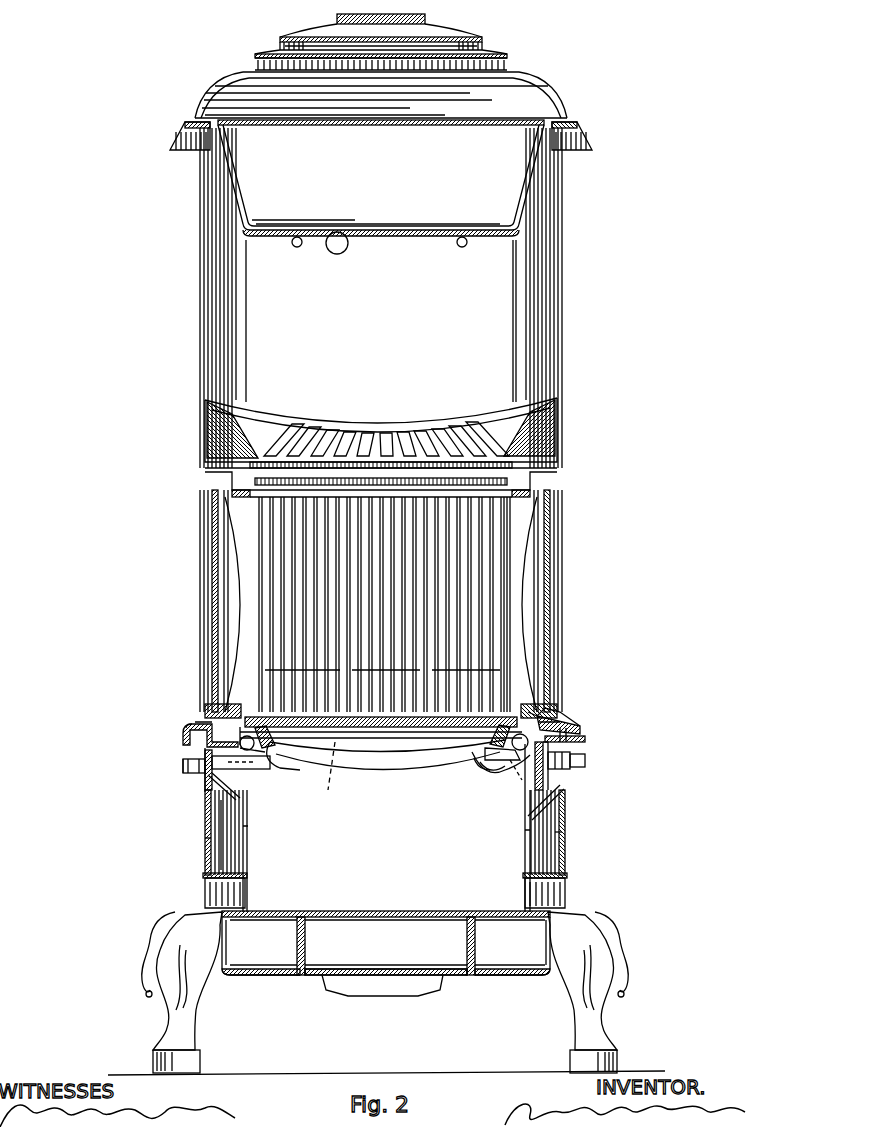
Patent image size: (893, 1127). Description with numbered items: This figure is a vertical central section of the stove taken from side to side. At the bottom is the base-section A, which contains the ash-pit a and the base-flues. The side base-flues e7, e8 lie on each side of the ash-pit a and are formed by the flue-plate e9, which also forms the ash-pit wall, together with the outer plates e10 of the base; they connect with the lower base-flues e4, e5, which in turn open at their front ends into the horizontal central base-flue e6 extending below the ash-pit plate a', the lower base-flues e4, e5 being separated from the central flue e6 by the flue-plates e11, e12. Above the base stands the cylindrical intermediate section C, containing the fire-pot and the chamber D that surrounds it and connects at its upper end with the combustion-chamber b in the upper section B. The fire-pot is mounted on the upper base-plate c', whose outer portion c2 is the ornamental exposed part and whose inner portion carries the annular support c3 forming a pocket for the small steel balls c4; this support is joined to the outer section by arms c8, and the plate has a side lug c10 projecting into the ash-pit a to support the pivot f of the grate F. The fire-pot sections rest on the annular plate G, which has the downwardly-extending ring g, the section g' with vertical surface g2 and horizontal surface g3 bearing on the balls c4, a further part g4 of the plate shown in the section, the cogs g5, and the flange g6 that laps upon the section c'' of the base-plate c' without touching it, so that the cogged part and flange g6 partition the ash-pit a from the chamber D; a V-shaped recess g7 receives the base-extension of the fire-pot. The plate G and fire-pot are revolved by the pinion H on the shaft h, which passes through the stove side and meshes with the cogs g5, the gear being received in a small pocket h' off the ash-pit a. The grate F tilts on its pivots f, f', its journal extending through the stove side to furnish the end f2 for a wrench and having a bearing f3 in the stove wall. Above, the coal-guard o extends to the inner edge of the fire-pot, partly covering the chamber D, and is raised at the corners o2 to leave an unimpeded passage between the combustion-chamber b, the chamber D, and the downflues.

The upper section B is at (560, 320).
The combustion-chamber b is at (381, 261).
The coal-guard o is at (290, 426).
The raised corners o2 is at (226, 412).
The intermediate section C is at (546, 553).
The chamber surrounding the fire-pot D is at (536, 598).
The annular fire-pot-supporting plate G is at (381, 734).
The downwardly-extending ring g is at (330, 771).
The section of plate G g' is at (577, 699).
The vertical surface g2 is at (498, 712).
The horizontal surface g3 is at (252, 724).
The grate pivot g4 is at (258, 746).
The cogs g5 is at (614, 727).
The horizontal extension or flange g6 is at (186, 725).
The recess g7 is at (540, 716).
The grate F is at (386, 755).
The pivot of the grate f is at (332, 752).
The pivot of the grate f' is at (207, 789).
The end of the grate pivot f2 is at (183, 766).
The bearing f3 is at (203, 772).
The upper base-plate c' is at (388, 709).
The outer portion of the base-plate c2 is at (618, 741).
The annular support c3 is at (503, 776).
The small steel balls c4 is at (498, 758).
The arms or sections c8 is at (512, 791).
The side lug c10 is at (490, 770).
The section of the base-plate c'' is at (394, 763).
The pinion H is at (548, 785).
The shaft h is at (591, 769).
The small pocket h' is at (568, 802).
The base-section A is at (566, 842).
The ash-pit a is at (386, 828).
The ash-pit plate a' is at (386, 904).
The lower base-flue e4 is at (261, 946).
The lower base-flue e5 is at (512, 946).
The horizontal central base-flue e6 is at (386, 947).
The side base-flue e7 is at (226, 835).
The side base-flue e8 is at (560, 836).
The flue-plate e9 is at (249, 832).
The outer plates of the base e10 is at (206, 840).
The flue-plate e11 is at (306, 946).
The flue-plate e12 is at (467, 949).